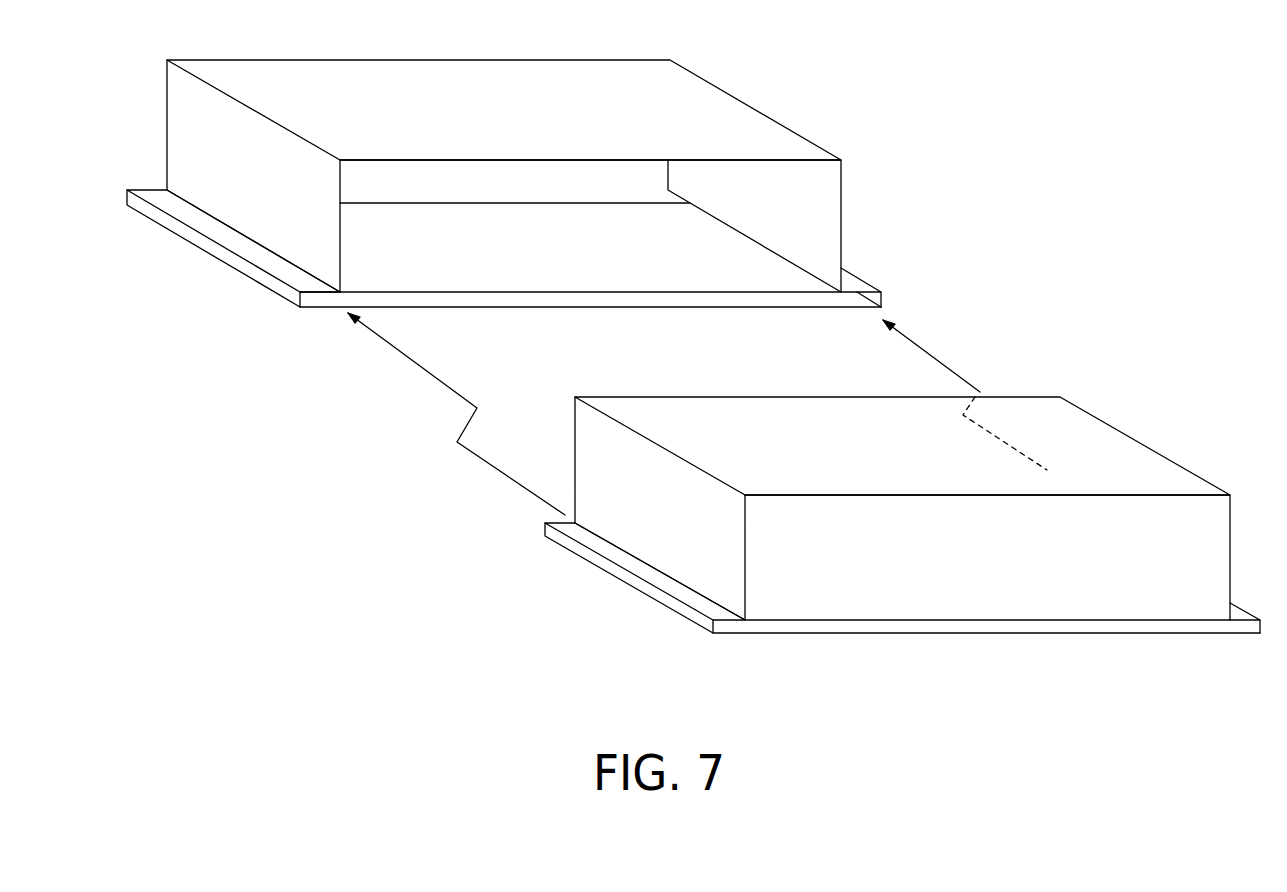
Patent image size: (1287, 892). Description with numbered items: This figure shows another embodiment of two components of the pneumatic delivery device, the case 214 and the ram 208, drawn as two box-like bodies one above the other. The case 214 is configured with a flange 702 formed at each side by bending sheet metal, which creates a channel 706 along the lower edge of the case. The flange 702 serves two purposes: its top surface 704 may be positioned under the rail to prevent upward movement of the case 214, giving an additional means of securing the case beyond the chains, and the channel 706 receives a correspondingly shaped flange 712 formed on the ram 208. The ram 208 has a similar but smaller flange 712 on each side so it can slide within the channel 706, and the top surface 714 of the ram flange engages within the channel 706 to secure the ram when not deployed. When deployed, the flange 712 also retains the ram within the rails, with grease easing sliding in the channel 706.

The case 214 is at (760, 110).
The ram 208 is at (1073, 405).
The flange 702 is at (208, 253).
The top surface 704 is at (175, 210).
The channel 706 is at (320, 300).
The flange 712 is at (612, 577).
The top surface 714 is at (617, 553).